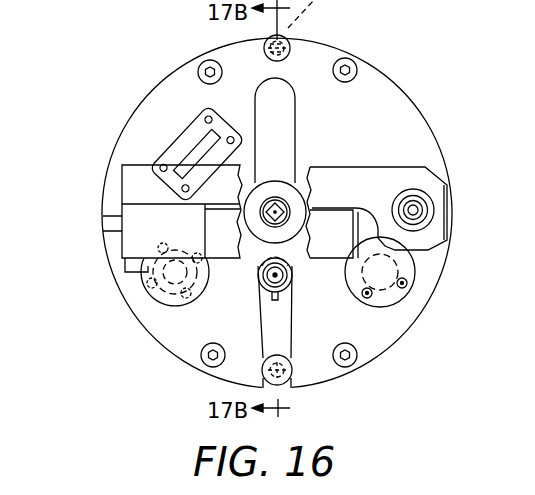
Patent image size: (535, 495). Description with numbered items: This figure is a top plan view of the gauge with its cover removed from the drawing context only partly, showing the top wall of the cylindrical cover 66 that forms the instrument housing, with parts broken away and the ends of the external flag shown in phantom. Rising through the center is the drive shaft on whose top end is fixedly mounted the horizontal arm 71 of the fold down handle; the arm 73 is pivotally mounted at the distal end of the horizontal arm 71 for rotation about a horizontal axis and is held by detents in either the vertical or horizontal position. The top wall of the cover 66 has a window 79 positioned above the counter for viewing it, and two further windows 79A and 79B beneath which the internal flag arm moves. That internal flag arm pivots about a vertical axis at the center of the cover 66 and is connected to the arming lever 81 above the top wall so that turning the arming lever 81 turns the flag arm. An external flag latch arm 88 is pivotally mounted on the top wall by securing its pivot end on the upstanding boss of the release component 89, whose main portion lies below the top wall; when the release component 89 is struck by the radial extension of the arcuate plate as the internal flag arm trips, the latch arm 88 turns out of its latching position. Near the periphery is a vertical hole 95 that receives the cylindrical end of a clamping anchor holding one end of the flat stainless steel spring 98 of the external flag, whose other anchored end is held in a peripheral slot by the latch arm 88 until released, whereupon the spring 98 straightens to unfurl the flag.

The cylindrical cover 66 is at (412, 101).
The horizontal arm 71 is at (340, 167).
The arm 73 is at (338, 260).
The window 79 is at (190, 140).
The window 79A is at (165, 292).
The window 79B is at (405, 299).
The arming lever 81 is at (298, 118).
The external flag latch arm 88 is at (297, 330).
The release component 89 is at (268, 292).
The vertical hole 95 is at (292, 48).
The flat stainless steel spring 98 is at (290, 384).